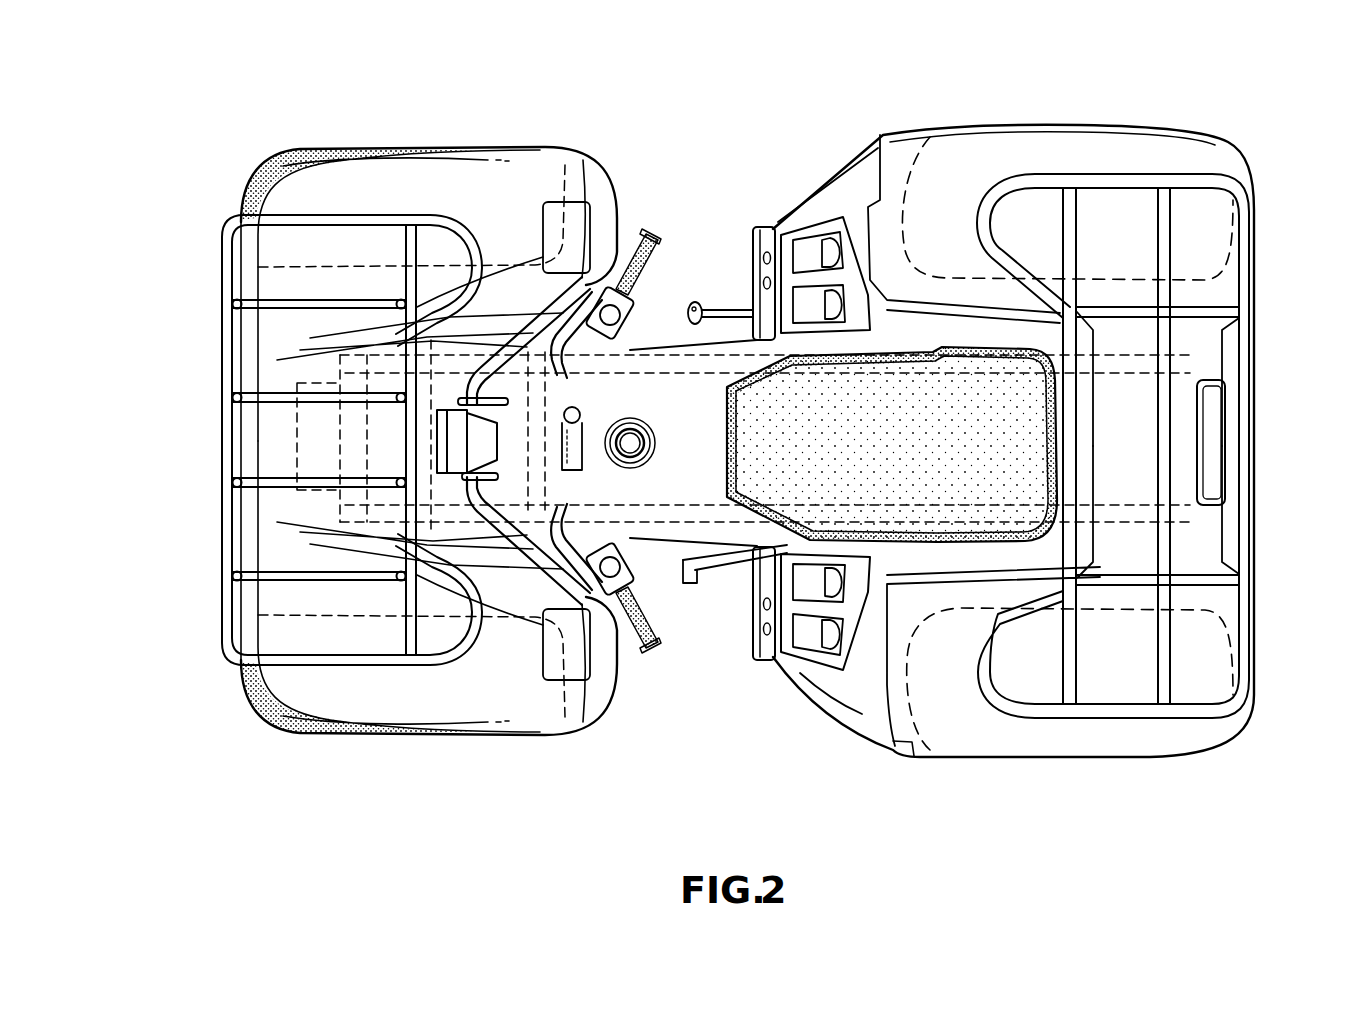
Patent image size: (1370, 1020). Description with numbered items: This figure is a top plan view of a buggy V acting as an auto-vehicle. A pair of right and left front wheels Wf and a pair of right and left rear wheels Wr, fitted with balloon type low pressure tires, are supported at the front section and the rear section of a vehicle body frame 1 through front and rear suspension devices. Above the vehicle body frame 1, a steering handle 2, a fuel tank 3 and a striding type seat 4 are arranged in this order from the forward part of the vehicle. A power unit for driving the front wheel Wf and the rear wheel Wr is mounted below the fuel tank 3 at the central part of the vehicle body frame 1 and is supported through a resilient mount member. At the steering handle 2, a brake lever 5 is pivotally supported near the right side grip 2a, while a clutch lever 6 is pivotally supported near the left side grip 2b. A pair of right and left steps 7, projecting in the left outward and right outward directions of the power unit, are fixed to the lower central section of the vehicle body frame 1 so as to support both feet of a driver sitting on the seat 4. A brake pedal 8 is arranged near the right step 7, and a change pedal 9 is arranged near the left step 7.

The buggy V is at (804, 166).
The front wheel Wf is at (305, 160).
The rear wheel Wr is at (1224, 172).
The vehicle body frame 1 is at (1298, 447).
The steering handle 2 is at (565, 385).
The right side grip 2a is at (641, 272).
The left side grip 2b is at (660, 648).
The fuel tank 3 is at (695, 453).
The striding type seat 4 is at (911, 458).
The brake lever 5 is at (583, 275).
The clutch lever 6 is at (597, 655).
The step 7 is at (763, 230).
The brake pedal 8 is at (716, 310).
The change pedal 9 is at (697, 583).